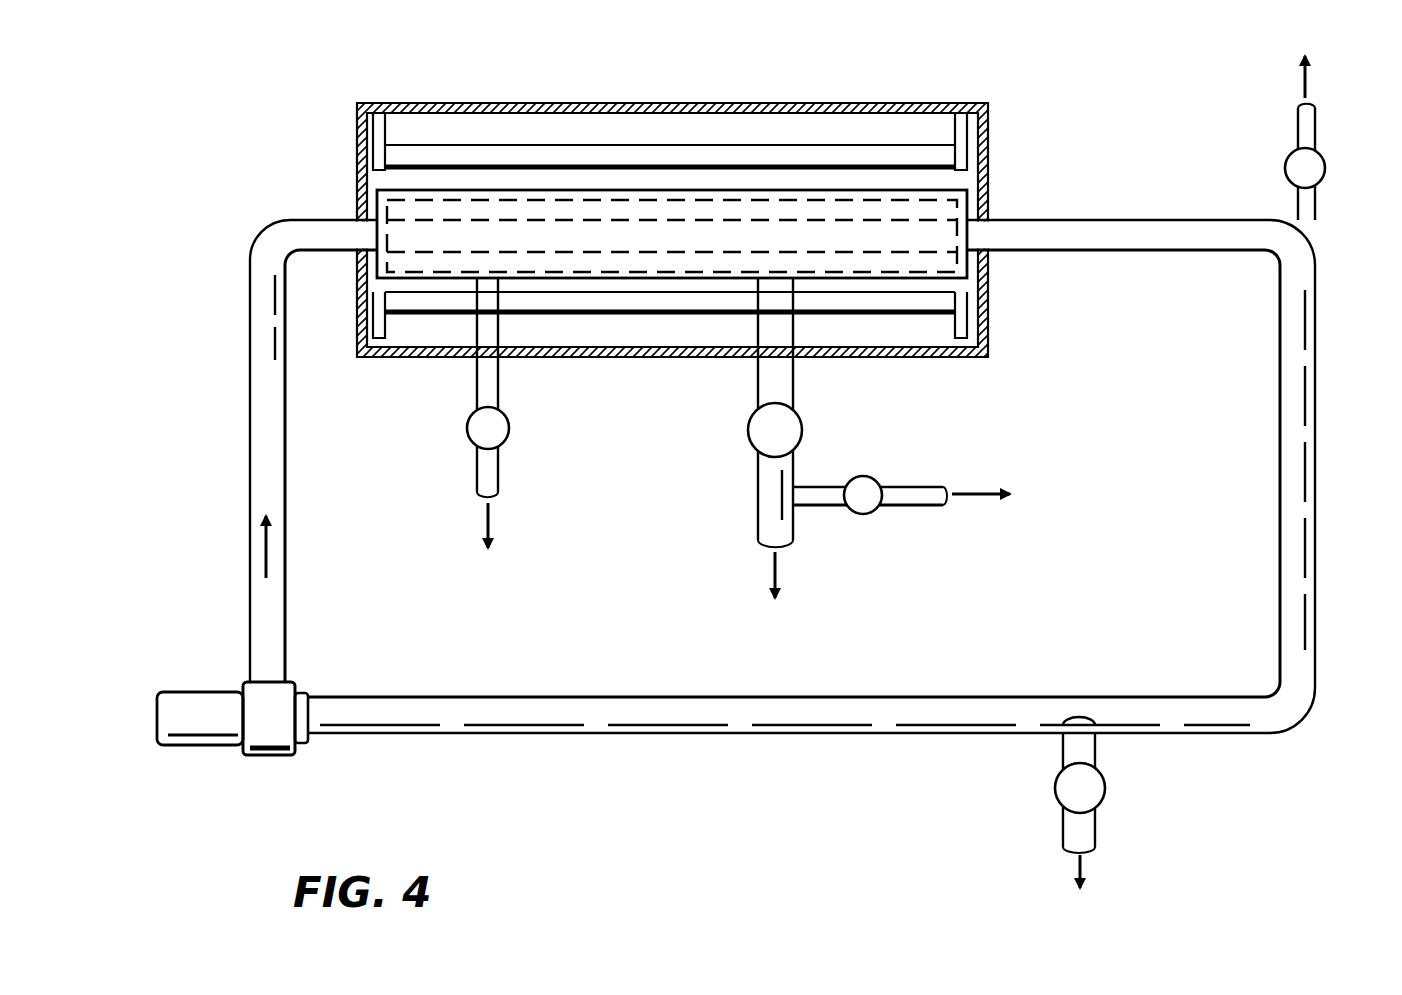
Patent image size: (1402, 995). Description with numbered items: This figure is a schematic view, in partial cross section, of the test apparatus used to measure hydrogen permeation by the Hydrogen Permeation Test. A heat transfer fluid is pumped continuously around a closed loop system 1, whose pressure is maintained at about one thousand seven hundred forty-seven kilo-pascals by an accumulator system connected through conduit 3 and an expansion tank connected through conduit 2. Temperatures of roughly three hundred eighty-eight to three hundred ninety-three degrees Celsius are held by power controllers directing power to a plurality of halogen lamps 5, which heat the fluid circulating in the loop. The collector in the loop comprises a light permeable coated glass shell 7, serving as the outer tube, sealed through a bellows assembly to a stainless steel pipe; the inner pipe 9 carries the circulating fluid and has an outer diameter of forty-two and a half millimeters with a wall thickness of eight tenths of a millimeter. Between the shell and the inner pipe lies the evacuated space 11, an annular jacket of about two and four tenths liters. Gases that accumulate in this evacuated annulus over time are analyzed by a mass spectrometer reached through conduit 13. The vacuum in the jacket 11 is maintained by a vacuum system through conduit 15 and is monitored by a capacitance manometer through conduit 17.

The system 1 is at (557, 738).
The conduit 2 is at (1318, 218).
The conduit 3 is at (1097, 824).
The halogen lamps 5 is at (746, 148).
The light permeable coated glass shell 7 is at (372, 194).
The inner pipe 9 is at (568, 218).
The evacuated space 11 is at (975, 200).
The conduit 13 is at (910, 487).
The conduit 15 is at (760, 393).
The conduit 17 is at (482, 392).